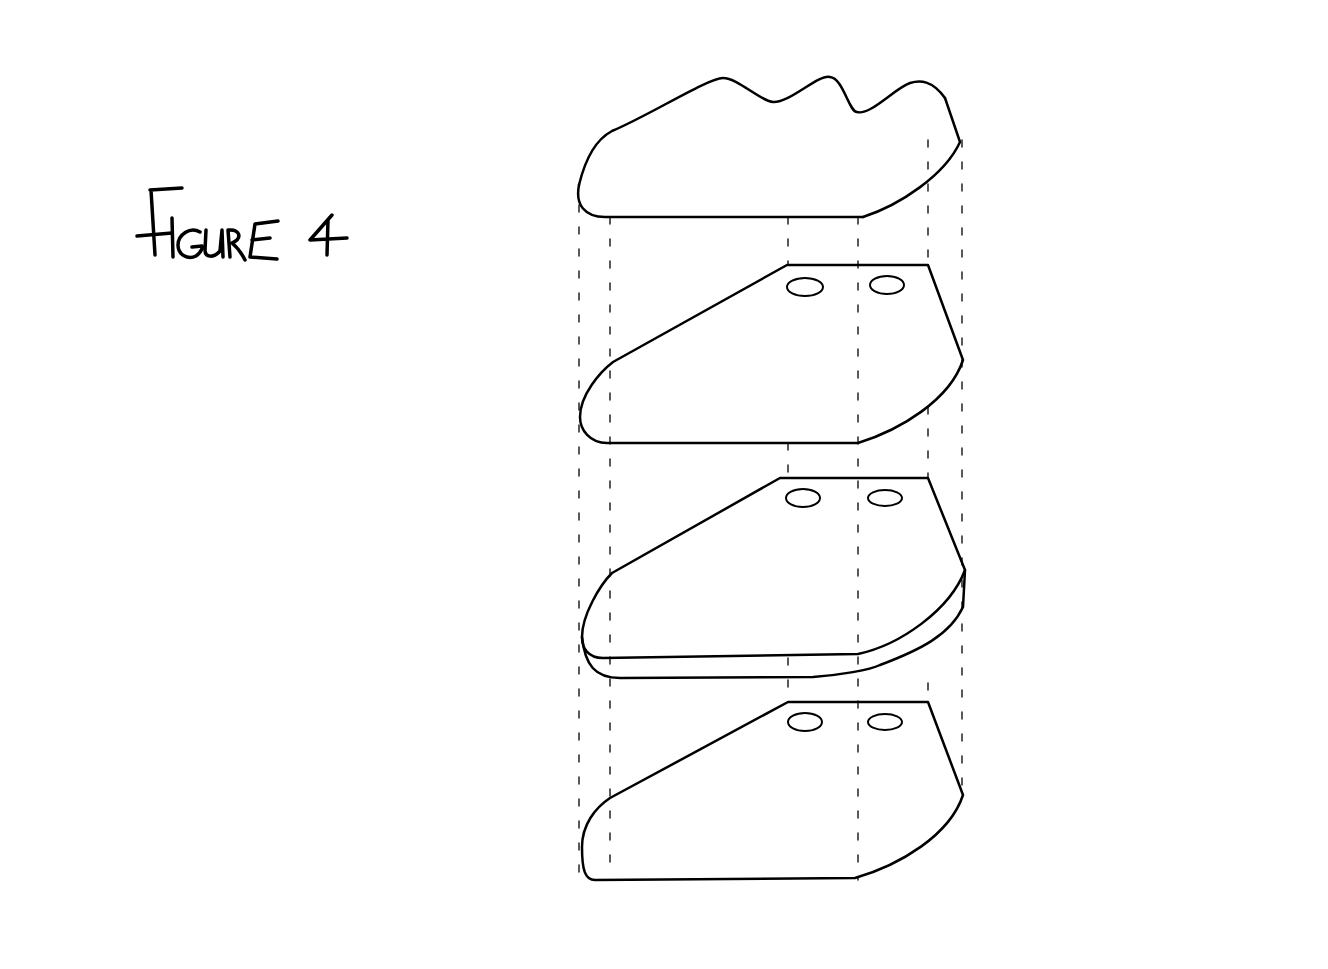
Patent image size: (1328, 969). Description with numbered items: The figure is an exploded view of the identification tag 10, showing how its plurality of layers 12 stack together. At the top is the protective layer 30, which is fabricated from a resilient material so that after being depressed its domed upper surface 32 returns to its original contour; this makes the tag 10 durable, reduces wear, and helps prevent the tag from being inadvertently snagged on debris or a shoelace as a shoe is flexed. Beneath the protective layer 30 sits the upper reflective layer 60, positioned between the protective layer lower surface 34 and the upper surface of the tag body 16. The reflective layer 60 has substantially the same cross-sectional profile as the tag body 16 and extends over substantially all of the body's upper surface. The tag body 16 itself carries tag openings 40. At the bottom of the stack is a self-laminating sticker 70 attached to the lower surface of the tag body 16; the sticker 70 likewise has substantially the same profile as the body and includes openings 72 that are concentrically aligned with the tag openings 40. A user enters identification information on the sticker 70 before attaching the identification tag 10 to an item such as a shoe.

The identification tag 10 is at (1120, 137).
The layers 12 is at (983, 345).
The tag body 16 is at (953, 547).
The protective layer 30 is at (943, 97).
The protective layer upper surface 32 is at (678, 128).
The protective layer lower surface 34 is at (685, 218).
The tag openings 40 is at (868, 505).
The upper reflective layer 60 is at (580, 420).
The self-laminating sticker 70 is at (947, 825).
The sticker openings 72 is at (868, 732).